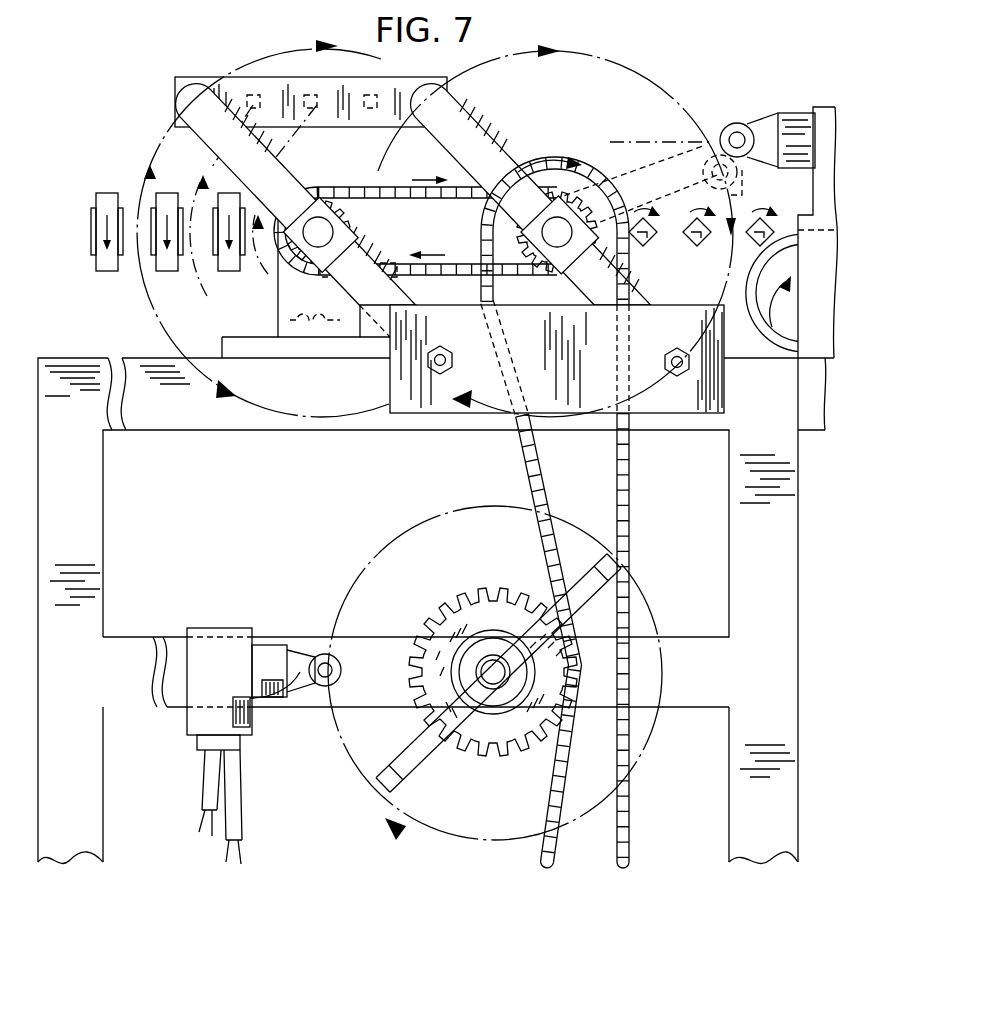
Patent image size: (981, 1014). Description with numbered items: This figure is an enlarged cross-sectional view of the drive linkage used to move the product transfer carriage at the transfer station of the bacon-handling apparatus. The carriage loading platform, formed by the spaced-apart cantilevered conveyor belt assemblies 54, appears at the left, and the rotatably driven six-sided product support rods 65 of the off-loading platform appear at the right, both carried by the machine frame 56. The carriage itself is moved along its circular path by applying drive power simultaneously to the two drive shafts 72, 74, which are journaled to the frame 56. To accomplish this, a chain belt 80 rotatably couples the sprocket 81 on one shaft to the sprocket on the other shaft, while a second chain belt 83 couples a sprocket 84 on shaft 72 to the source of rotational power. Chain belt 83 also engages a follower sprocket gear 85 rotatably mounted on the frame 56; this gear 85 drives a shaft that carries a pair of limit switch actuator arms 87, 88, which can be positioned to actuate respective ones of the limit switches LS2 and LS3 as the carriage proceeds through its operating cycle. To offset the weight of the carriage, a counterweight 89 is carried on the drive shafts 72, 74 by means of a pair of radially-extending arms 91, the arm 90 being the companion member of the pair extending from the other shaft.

The cantilevered conveyor belt assemblies 54 is at (107, 275).
The frame 56 is at (93, 492).
The product support rods 65 is at (648, 236).
The drive shaft 72 is at (481, 237).
The drive shaft 74 is at (316, 247).
The chain belt 80 is at (366, 190).
The sprocket 81 is at (337, 192).
The chain belt 83 is at (620, 500).
The sprocket 84 is at (538, 176).
The follower sprocket gear 85 is at (462, 617).
The limit switch actuator arm 87 is at (421, 754).
The limit switch actuator arm 88 is at (583, 570).
The counterweight 89 is at (453, 398).
The link arm 90 is at (640, 292).
The radially-extending arms 91 is at (386, 345).
The limit switch LS2 is at (237, 628).
The limit switch LS3 is at (283, 700).